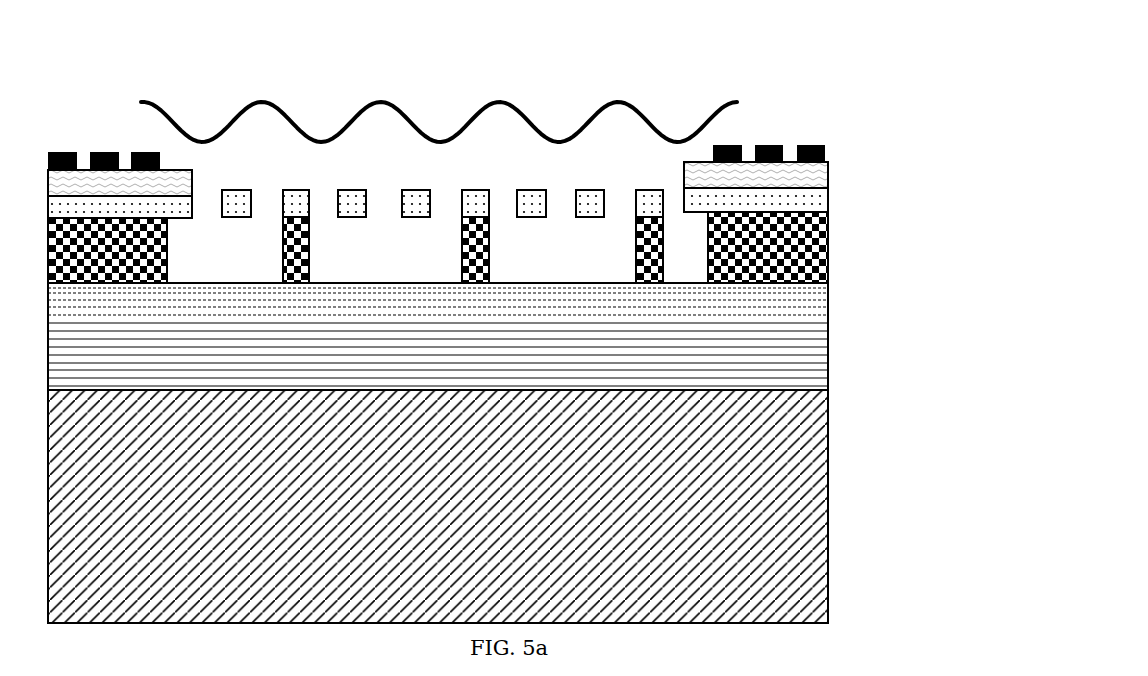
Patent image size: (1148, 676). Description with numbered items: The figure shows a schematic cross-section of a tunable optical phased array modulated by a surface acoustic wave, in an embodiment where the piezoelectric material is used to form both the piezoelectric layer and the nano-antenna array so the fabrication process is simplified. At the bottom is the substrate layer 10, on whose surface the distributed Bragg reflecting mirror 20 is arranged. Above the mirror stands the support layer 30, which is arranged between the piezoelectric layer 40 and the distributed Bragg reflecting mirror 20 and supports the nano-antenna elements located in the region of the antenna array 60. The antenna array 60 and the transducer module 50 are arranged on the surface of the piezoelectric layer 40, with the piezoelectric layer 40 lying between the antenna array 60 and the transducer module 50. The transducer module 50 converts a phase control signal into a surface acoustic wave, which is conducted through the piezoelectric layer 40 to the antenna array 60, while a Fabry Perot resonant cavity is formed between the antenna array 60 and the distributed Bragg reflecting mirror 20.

The substrate layer 10 is at (828, 478).
The distributed Bragg reflecting mirror 20 is at (826, 318).
The support layer 30 is at (817, 238).
The piezoelectric layer 40 is at (788, 175).
The transducer module 50 is at (768, 142).
The antenna array 60 is at (808, 203).